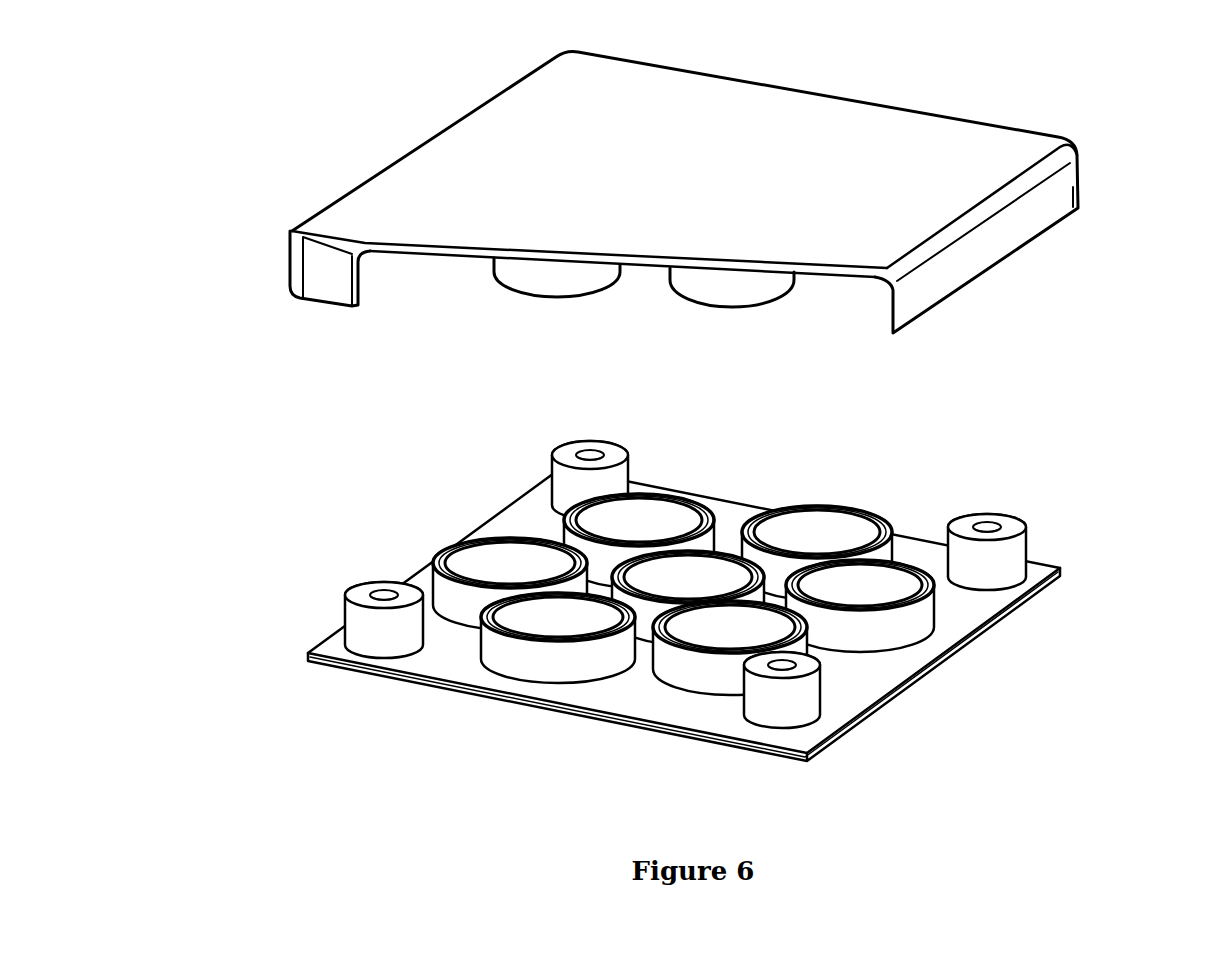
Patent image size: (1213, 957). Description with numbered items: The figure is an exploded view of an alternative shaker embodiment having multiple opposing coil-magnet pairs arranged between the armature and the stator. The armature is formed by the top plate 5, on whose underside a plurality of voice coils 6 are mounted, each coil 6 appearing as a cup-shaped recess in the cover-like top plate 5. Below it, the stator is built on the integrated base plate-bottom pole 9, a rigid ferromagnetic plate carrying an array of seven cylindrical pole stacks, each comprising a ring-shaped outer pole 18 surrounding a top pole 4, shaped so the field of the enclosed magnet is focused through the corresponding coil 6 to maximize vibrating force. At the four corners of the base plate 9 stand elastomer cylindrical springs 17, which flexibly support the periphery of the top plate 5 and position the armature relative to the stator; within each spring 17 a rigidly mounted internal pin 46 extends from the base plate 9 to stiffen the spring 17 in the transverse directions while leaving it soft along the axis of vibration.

The top pole 4 is at (698, 610).
The top plate 5 is at (917, 148).
The voice coil 6 is at (530, 283).
The integrated base plate-bottom pole 9 is at (333, 650).
The spring 17 is at (716, 598).
The outer pole 18 is at (443, 557).
The pin 46 is at (592, 452).